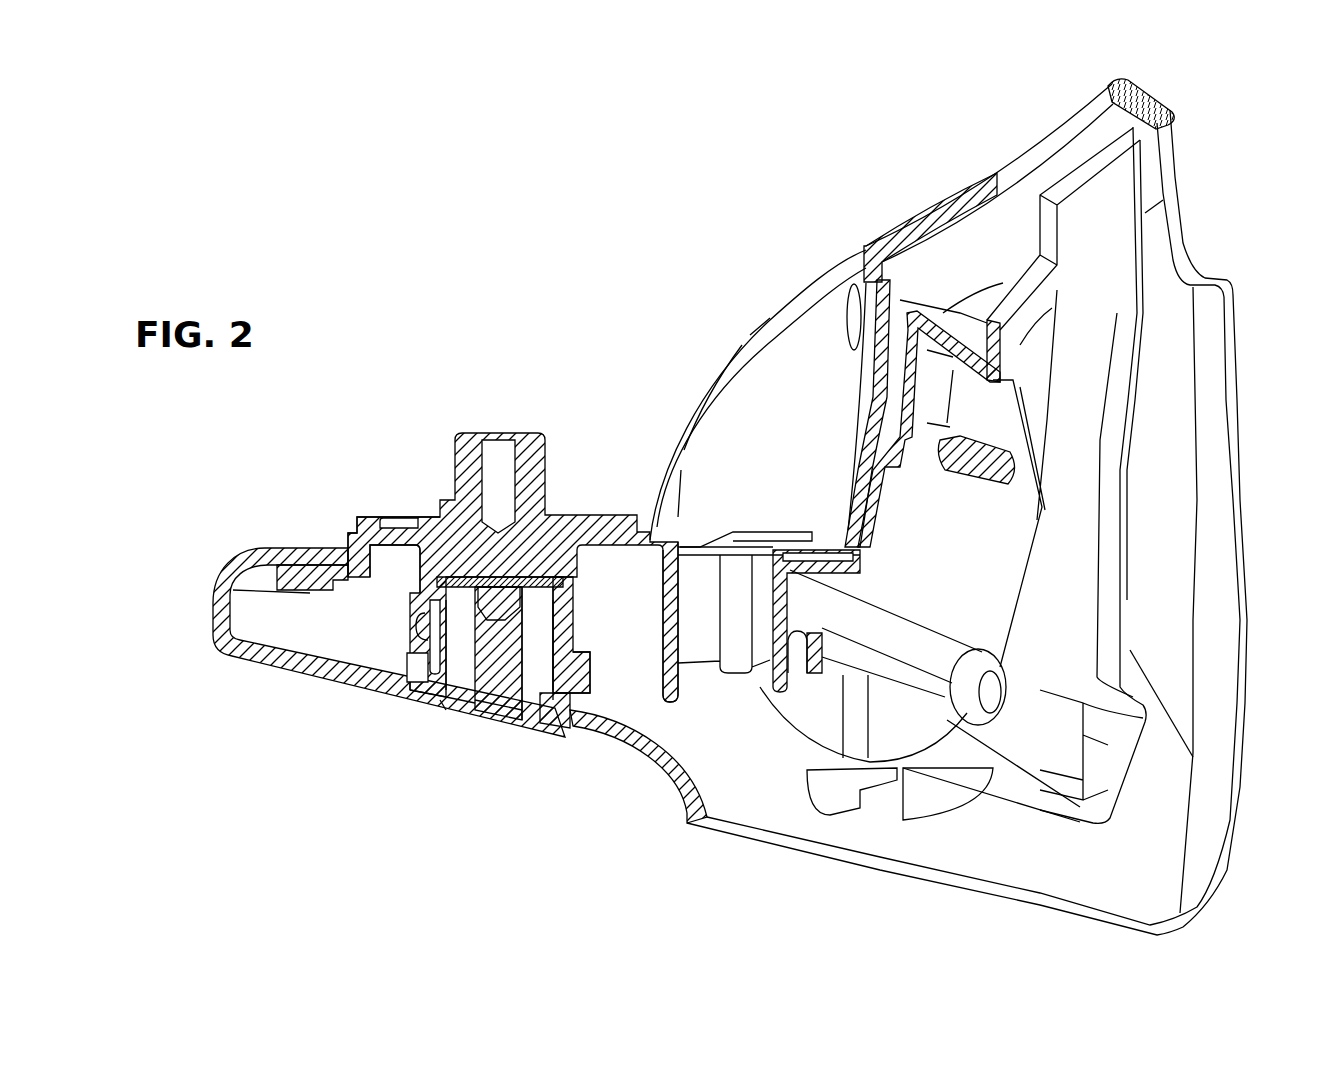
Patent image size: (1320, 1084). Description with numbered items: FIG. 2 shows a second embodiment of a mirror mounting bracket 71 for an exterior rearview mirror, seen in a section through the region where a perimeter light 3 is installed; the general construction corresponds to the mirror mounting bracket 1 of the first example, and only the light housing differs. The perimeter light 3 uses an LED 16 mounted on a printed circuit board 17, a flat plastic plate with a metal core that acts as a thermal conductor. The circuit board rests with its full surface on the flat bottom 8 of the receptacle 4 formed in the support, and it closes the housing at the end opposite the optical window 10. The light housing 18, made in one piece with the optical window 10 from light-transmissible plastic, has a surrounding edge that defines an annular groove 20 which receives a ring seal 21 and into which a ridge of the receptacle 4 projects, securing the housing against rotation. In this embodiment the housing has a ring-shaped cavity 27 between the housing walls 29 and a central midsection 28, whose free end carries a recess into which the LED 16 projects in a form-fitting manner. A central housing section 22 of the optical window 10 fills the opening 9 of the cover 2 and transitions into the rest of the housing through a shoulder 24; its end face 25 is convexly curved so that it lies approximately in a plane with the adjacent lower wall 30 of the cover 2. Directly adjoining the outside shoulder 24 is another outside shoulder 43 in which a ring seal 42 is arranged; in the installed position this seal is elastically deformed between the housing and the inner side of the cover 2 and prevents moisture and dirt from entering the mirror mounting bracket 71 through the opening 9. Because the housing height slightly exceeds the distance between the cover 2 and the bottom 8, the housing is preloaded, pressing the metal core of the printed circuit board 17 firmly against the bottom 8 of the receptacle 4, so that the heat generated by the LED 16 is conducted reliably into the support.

The mirror mounting bracket 1 is at (909, 182).
The cover 2 is at (258, 553).
The perimeter light 3 is at (357, 530).
The receptacle 4 is at (471, 579).
The bottom 8 is at (505, 577).
The opening 9 is at (430, 697).
The optical window 10 is at (440, 705).
The LED 16 is at (487, 612).
The printed circuit board 17 is at (433, 598).
The light housing 18 is at (565, 594).
The annular groove 20 is at (575, 668).
The ring seal 21 is at (410, 677).
The central section 22 is at (503, 663).
The shoulder 24 is at (568, 727).
The end face 25 is at (473, 703).
The cavity 27 is at (540, 603).
The central midsection 28 is at (415, 621).
The housing walls 29 is at (445, 605).
The lower wall 30 is at (680, 772).
The ring seal 42 is at (575, 710).
The outside shoulder 43 is at (413, 688).
The mirror mounting bracket 71 is at (802, 285).